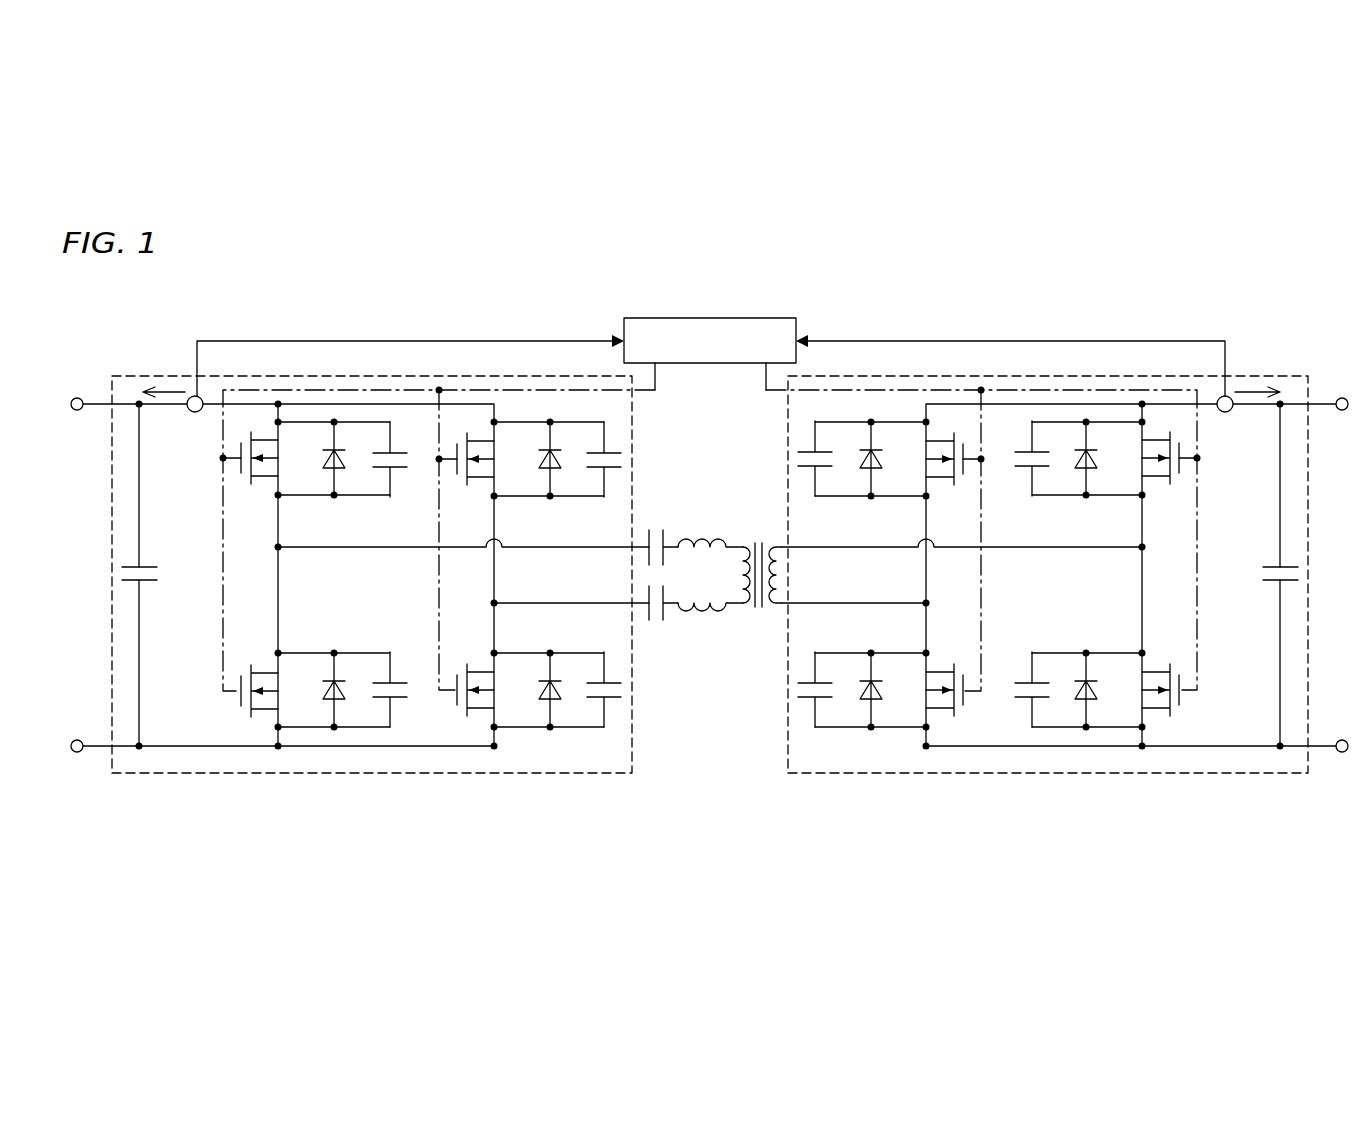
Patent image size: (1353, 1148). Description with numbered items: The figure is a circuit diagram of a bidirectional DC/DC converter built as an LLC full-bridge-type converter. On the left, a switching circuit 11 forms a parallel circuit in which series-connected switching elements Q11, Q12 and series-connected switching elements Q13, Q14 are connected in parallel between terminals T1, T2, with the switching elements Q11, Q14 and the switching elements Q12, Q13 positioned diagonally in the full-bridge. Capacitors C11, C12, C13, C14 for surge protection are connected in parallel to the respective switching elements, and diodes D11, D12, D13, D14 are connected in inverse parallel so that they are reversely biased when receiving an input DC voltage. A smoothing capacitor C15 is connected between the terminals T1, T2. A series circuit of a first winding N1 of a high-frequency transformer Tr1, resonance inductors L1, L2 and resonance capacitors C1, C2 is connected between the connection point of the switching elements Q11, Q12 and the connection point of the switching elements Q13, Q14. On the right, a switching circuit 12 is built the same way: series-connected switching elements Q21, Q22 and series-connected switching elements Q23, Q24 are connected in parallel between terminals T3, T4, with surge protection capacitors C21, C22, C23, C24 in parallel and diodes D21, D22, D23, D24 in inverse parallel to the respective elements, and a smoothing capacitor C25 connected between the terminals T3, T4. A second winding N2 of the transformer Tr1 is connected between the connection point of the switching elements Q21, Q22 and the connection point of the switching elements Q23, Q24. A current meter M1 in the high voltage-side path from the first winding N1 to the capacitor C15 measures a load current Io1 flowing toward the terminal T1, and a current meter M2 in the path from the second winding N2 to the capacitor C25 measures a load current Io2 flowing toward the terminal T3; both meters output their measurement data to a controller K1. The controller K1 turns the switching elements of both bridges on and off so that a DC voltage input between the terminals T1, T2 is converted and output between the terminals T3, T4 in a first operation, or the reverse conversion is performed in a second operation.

The switching circuit 11 is at (128, 374).
The switching circuit 12 is at (1292, 373).
The terminal T1 is at (77, 386).
The terminal T2 is at (79, 764).
The terminal T3 is at (1338, 385).
The terminal T4 is at (1339, 763).
The load current Io1 is at (172, 383).
The load current Io2 is at (1258, 385).
The current meter M1 is at (192, 412).
The current meter M2 is at (1229, 412).
The controller K1 is at (710, 320).
The switching element Q11 is at (250, 475).
The switching element Q12 is at (252, 676).
The switching element Q13 is at (466, 475).
The switching element Q14 is at (470, 676).
The diode D11 is at (313, 459).
The diode D12 is at (312, 690).
The diode D13 is at (529, 459).
The diode D14 is at (529, 690).
The capacitor C11 is at (401, 459).
The capacitor C12 is at (404, 693).
The capacitor C13 is at (632, 459).
The capacitor C14 is at (632, 689).
The smoothing capacitor C15 is at (162, 577).
The switching element Q21 is at (953, 476).
The switching element Q22 is at (949, 676).
The switching element Q23 is at (1169, 474).
The switching element Q24 is at (1164, 676).
The diode D21 is at (891, 459).
The diode D22 is at (891, 690).
The diode D23 is at (1107, 459).
The diode D24 is at (1106, 690).
The capacitor C21 is at (790, 458).
The capacitor C22 is at (788, 689).
The capacitor C23 is at (1018, 458).
The capacitor C24 is at (1017, 689).
The smoothing capacitor C25 is at (1258, 577).
The resonance capacitor C1 is at (660, 533).
The resonance capacitor C2 is at (661, 621).
The resonance inductor L1 is at (710, 524).
The resonance inductor L2 is at (710, 626).
The high-frequency transformer Tr1 is at (756, 560).
The first winding N1 is at (729, 575).
The second winding N2 is at (793, 575).